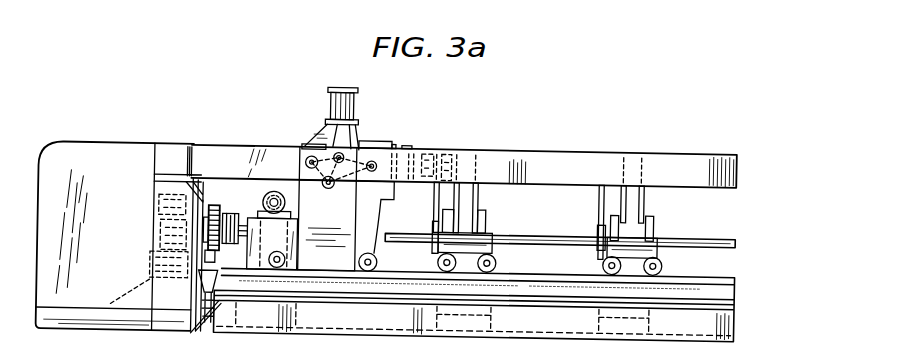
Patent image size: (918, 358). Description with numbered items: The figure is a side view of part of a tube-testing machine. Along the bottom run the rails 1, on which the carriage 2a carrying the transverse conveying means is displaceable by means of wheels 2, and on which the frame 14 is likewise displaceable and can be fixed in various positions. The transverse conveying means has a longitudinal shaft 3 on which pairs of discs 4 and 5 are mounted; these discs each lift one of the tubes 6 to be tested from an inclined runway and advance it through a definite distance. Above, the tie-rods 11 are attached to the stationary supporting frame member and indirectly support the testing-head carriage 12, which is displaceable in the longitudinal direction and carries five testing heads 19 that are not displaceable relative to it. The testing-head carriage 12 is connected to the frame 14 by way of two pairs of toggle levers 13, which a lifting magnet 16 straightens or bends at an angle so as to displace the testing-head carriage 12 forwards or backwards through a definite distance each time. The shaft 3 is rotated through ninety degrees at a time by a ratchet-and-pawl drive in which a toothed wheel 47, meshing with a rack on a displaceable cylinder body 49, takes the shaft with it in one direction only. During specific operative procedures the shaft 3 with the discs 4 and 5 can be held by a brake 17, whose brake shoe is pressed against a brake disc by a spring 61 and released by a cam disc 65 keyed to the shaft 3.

The rails 1 is at (543, 272).
The wheels 2 is at (443, 262).
The carriage 2a is at (489, 236).
The longitudinal shaft 3 is at (532, 229).
The disc 4 is at (621, 197).
The disc 5 is at (642, 199).
The tubes 6 is at (449, 147).
The tie-rods 11 is at (552, 160).
The testing-head carriage 12 is at (378, 141).
The toggle levers 13 is at (348, 178).
The frame 14 is at (323, 257).
The lifting magnet 16 is at (328, 98).
The brake 17 is at (216, 200).
The testing heads 19 is at (414, 148).
The toothed wheel 47 is at (180, 196).
The cylinder body 49 is at (152, 259).
The spring 61 is at (203, 280).
The cam disc 65 is at (231, 216).